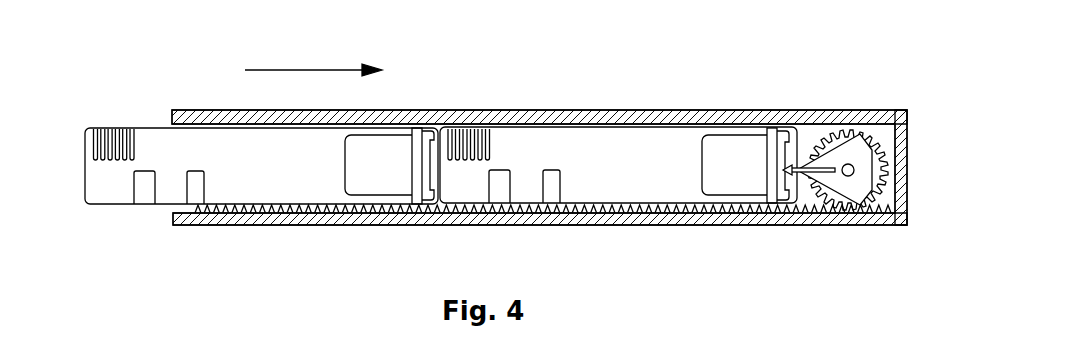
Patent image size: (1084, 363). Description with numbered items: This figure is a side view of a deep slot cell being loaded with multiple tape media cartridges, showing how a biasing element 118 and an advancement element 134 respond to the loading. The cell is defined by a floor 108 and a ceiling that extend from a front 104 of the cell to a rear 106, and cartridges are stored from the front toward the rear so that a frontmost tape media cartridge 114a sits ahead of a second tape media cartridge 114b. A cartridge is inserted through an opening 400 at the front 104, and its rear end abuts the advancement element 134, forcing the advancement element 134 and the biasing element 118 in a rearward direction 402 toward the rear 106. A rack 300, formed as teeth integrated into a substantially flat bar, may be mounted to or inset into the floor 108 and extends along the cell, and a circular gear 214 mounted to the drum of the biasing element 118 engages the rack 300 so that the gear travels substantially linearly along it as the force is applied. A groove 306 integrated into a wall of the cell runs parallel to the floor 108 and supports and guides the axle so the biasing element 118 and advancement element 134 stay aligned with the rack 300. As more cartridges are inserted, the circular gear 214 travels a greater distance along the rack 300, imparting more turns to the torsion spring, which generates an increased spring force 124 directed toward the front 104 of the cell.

The front 104 is at (158, 93).
The rear 106 is at (903, 180).
The floor 108 is at (792, 218).
The frontmost tape media cartridge 114a is at (160, 133).
The tape media cartridge 114b is at (578, 128).
The biasing element 118 is at (891, 142).
The spring force 124 is at (806, 170).
The advancement element 134 is at (800, 93).
The circular gear 214 is at (860, 147).
The rack 300 is at (730, 210).
The groove 306 is at (891, 173).
The opening 400 is at (148, 218).
The rearward direction 402 is at (306, 70).